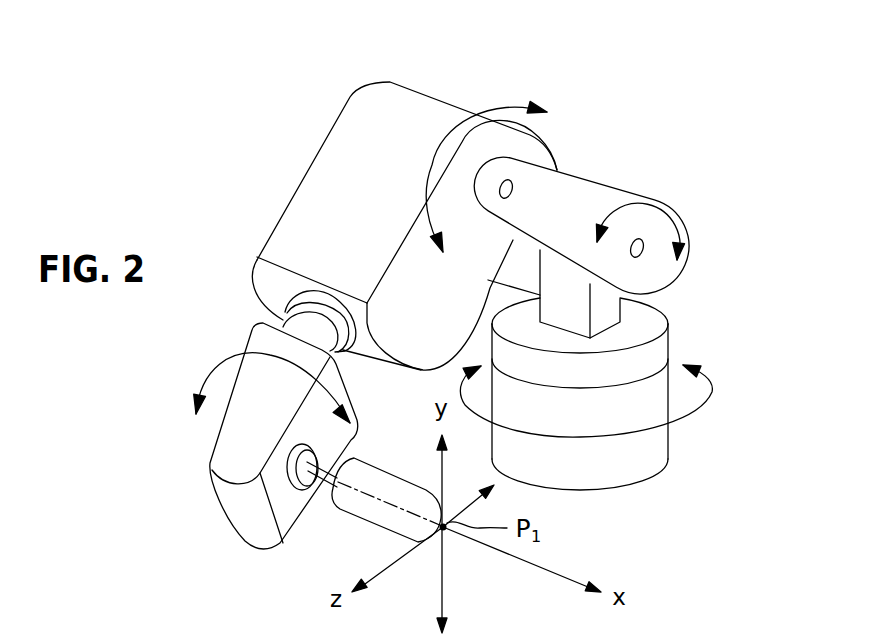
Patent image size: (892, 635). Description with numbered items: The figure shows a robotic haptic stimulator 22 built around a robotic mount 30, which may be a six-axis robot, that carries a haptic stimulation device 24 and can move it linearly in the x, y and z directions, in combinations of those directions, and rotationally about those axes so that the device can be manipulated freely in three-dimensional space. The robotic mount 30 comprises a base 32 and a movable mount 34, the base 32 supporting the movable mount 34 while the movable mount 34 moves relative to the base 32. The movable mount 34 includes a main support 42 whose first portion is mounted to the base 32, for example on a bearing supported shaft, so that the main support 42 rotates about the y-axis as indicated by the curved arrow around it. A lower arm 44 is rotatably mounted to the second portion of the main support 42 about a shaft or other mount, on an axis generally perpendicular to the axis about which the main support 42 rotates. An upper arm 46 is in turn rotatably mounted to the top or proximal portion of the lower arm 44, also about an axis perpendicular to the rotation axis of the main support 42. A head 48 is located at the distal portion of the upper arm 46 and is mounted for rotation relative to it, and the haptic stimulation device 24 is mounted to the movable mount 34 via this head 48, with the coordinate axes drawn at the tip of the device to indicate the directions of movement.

The robotic haptic stimulator 22 is at (627, 133).
The haptic stimulation device 24 is at (375, 470).
The robotic mount 30 is at (628, 357).
The base 32 is at (656, 453).
The movable mount 34 is at (458, 76).
The main support 42 is at (607, 312).
The lower arm 44 is at (662, 207).
The upper arm 46 is at (313, 173).
The head 48 is at (219, 501).